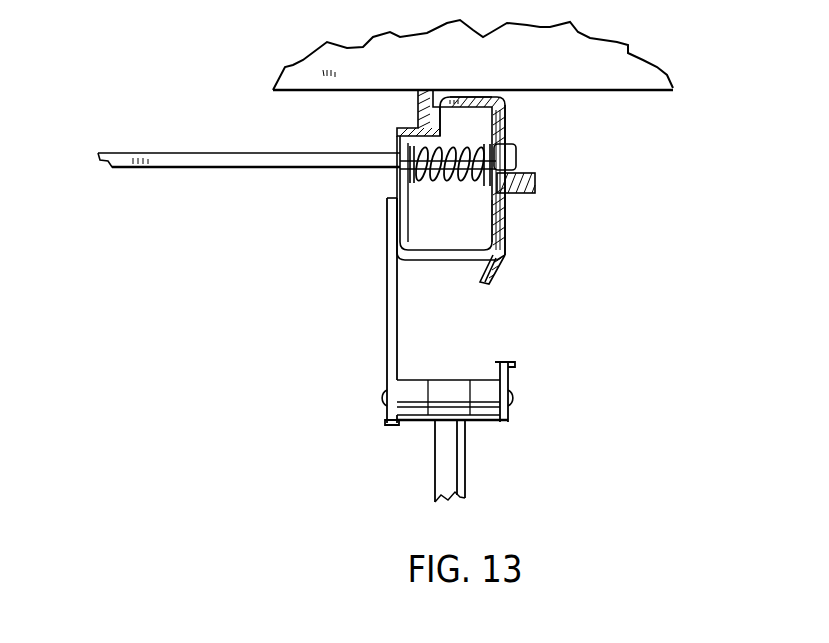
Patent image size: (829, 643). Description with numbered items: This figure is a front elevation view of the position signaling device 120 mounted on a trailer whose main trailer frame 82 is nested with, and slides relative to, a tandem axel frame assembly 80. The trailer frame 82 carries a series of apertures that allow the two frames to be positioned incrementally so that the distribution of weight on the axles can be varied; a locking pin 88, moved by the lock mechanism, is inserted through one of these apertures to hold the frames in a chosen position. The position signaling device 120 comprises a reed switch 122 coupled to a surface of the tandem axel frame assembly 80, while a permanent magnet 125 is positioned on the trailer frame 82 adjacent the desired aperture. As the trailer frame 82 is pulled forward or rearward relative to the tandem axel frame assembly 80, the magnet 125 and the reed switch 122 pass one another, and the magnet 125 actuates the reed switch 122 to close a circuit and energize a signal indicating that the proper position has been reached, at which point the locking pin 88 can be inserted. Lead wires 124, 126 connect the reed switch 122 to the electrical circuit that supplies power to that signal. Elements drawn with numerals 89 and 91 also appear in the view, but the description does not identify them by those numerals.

The tandem axel frame assembly 80 is at (428, 258).
The main trailer frame 82 is at (412, 130).
The locking pin 88 is at (532, 172).
The spring 89 is at (458, 178).
The plate 91 is at (350, 170).
The position signaling device 120 is at (518, 212).
The reed switch 122 is at (507, 226).
The lead wire 124 is at (497, 268).
The permanent magnet 125 is at (524, 214).
The lead wire 126 is at (505, 228).